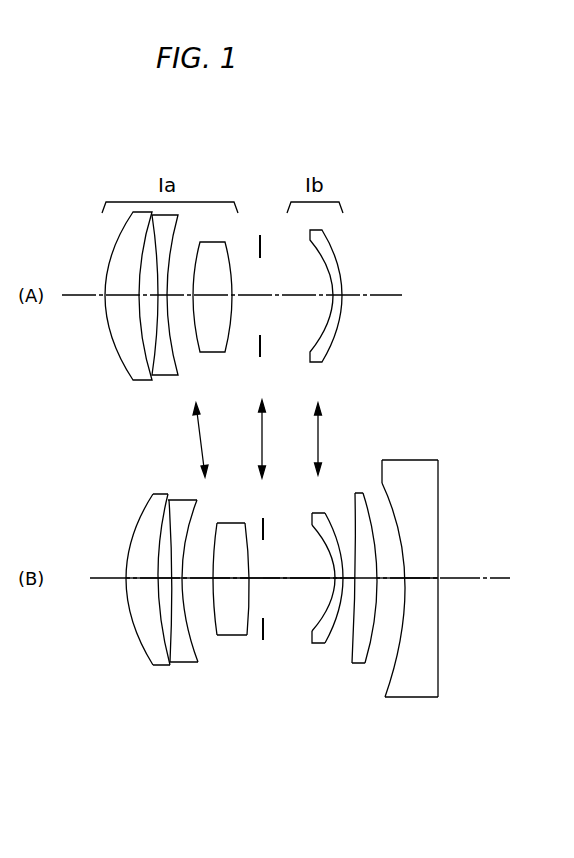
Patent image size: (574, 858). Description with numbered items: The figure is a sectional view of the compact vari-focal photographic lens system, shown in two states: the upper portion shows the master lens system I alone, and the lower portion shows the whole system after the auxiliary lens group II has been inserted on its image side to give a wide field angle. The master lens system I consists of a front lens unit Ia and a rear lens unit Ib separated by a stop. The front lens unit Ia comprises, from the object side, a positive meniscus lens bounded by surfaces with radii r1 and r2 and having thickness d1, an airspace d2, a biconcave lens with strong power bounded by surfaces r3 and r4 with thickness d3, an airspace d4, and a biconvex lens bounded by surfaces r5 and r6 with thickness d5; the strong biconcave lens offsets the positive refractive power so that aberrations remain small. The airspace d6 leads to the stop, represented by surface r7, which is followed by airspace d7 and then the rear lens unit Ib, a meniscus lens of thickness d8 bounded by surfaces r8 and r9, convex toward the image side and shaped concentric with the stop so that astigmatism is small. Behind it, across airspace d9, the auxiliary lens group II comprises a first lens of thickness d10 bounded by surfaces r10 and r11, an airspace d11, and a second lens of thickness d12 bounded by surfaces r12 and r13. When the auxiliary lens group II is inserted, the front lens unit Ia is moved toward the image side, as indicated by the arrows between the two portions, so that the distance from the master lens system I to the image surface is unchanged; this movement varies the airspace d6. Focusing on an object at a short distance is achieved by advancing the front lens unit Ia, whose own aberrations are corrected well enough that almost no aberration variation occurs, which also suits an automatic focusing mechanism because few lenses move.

The radius of curvature of first lens surface r1 is at (143, 648).
The radius of curvature of second lens surface r2 is at (168, 650).
The radius of curvature of third lens surface r3 is at (174, 652).
The radius of curvature of fourth lens surface r4 is at (197, 665).
The radius of curvature of fifth lens surface r5 is at (218, 635).
The radius of curvature of sixth lens surface r6 is at (244, 635).
The radius of curvature of seventh surface r7 is at (264, 626).
The radius of curvature of eighth lens surface r8 is at (310, 632).
The radius of curvature of ninth lens surface r9 is at (328, 647).
The radius of curvature of tenth lens surface r10 is at (352, 663).
The radius of curvature of eleventh lens surface r11 is at (364, 664).
The radius of curvature of twelfth lens surface r12 is at (388, 668).
The radius of curvature of thirteenth lens surface r13 is at (440, 688).
The thickness of first lens d1 is at (152, 579).
The airspace between first and second lenses d2 is at (165, 580).
The thickness of second lens d3 is at (179, 563).
The airspace between second and third lenses d4 is at (198, 580).
The thickness of third lens d5 is at (229, 576).
The airspace between front lens unit and stop d6 is at (259, 578).
The airspace between stop and rear lens unit d7 is at (311, 580).
The thickness of rear-unit meniscus lens d8 is at (335, 566).
The airspace between master lens system and auxiliary lens group d9 is at (340, 548).
The thickness of first auxiliary lens d10 is at (365, 578).
The airspace between auxiliary lenses d11 is at (393, 579).
The thickness of second auxiliary lens d12 is at (411, 577).
The front lens unit Ia is at (267, 733).
The rear lens unit Ib is at (348, 733).
The master lens system I is at (348, 783).
The auxiliary lens group II is at (458, 768).